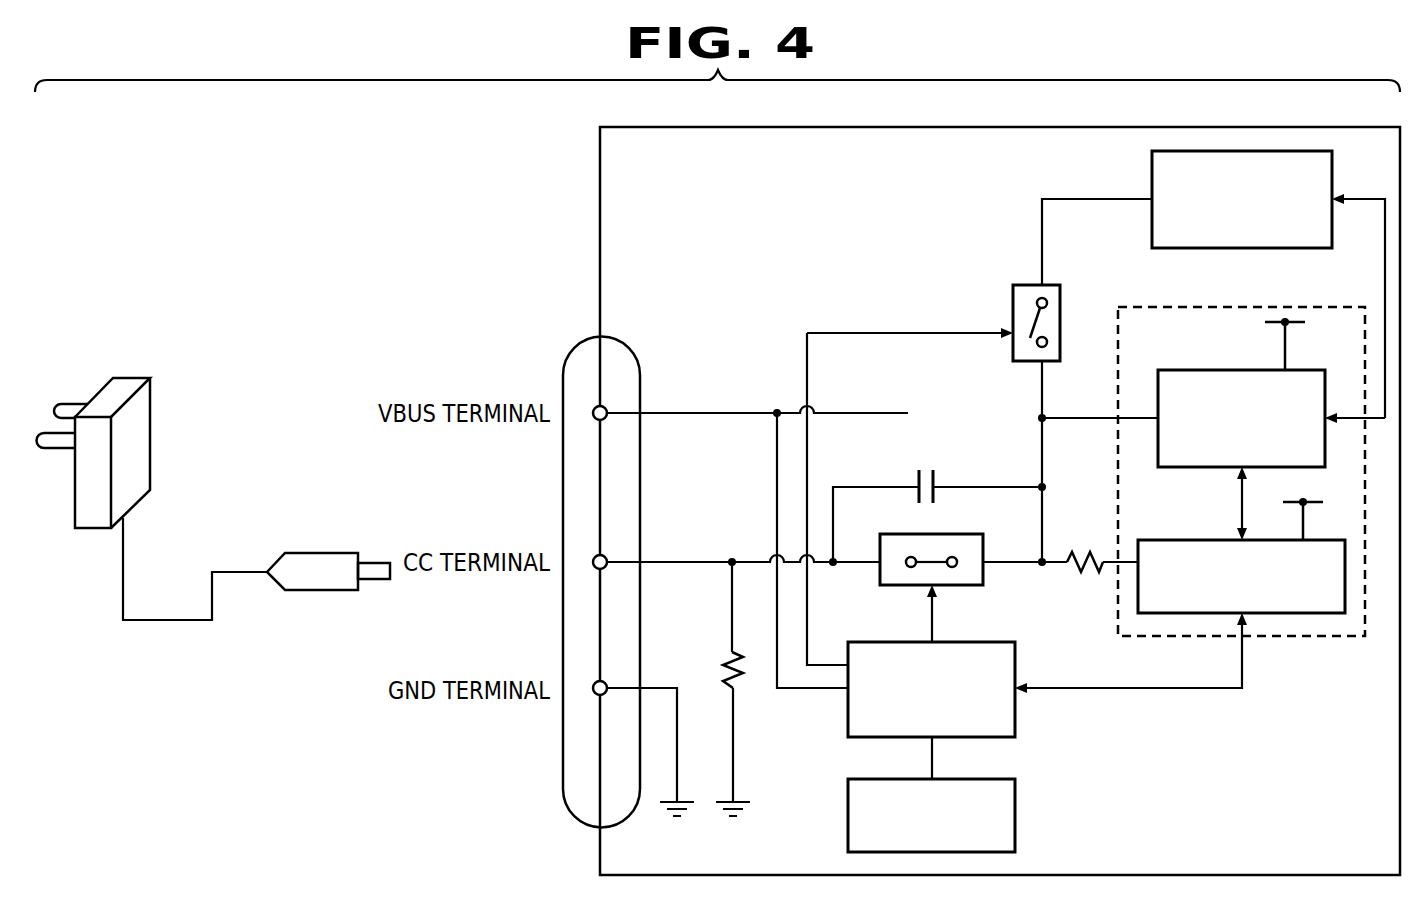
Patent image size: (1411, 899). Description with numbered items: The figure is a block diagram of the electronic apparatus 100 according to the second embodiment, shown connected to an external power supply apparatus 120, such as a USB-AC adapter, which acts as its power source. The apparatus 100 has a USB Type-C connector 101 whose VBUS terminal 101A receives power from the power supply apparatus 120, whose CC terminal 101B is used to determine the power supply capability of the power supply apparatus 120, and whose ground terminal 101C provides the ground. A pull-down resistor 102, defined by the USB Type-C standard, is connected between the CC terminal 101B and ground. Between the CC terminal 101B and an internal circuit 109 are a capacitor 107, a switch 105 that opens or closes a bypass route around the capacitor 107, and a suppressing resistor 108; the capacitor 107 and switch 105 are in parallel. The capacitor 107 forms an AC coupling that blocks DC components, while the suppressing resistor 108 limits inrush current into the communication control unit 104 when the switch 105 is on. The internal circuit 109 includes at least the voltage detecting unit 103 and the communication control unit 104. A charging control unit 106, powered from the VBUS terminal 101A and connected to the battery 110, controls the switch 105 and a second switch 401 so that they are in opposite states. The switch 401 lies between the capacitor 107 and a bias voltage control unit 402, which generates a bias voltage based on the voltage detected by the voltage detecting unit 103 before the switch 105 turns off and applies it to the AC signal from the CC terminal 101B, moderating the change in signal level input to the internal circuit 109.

The electronic apparatus 100 is at (600, 158).
The connector 101 is at (578, 342).
The VBUS terminal 101A is at (606, 407).
The CC terminal 101B is at (606, 556).
The ground terminal 101C is at (606, 682).
The pull-down resistor 102 is at (745, 688).
The voltage detecting unit 103 is at (1200, 370).
The communication control unit 104 is at (1185, 540).
The switch 105 is at (983, 585).
The charging control unit 106 is at (1015, 715).
The capacitor 107 is at (926, 465).
The suppressing resistor 108 is at (1085, 550).
The internal circuit 109 is at (1133, 306).
The battery 110 is at (1015, 820).
The power supply apparatus 120 is at (140, 377).
The switch 401 is at (1013, 297).
The bias voltage control unit 402 is at (1152, 172).